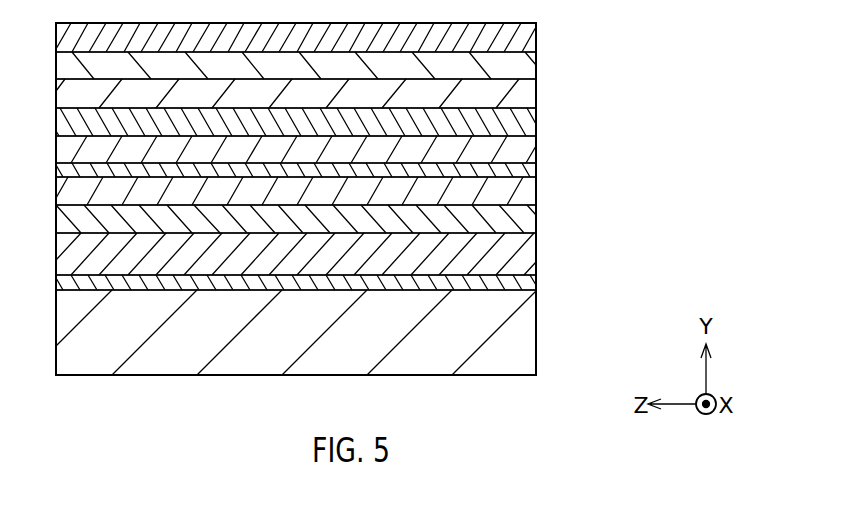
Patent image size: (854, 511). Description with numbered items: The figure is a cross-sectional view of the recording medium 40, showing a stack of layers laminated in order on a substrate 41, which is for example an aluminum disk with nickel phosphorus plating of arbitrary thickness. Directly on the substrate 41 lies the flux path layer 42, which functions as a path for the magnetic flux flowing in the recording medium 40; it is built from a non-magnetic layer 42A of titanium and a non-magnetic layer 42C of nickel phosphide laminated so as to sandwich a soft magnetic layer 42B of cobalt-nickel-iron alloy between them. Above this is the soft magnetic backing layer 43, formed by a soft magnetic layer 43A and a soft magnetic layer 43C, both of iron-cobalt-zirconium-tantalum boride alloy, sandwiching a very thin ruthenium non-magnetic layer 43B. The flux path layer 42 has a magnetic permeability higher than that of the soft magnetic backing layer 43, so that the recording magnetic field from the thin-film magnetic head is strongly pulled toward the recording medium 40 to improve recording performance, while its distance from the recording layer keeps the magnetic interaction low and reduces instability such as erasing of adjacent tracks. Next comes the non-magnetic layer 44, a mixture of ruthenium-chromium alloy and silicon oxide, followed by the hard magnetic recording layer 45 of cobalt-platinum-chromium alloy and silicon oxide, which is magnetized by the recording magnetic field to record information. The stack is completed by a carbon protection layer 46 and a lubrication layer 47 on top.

The recording medium 40 is at (386, 199).
The substrate 41 is at (537, 331).
The flux path layer 42 is at (362, 260).
The non-magnetic layer 42A is at (537, 285).
The soft magnetic layer 42B is at (537, 255).
The non-magnetic layer 42C is at (537, 228).
The soft magnetic backing layer 43 is at (362, 180).
The soft magnetic layer 43A is at (537, 190).
The non-magnetic layer 43B is at (537, 172).
The soft magnetic layer 43C is at (537, 146).
The non-magnetic layer 44 is at (537, 121).
The hard magnetic recording layer 45 is at (537, 93).
The protection layer 46 is at (537, 65).
The lubrication layer 47 is at (537, 36).